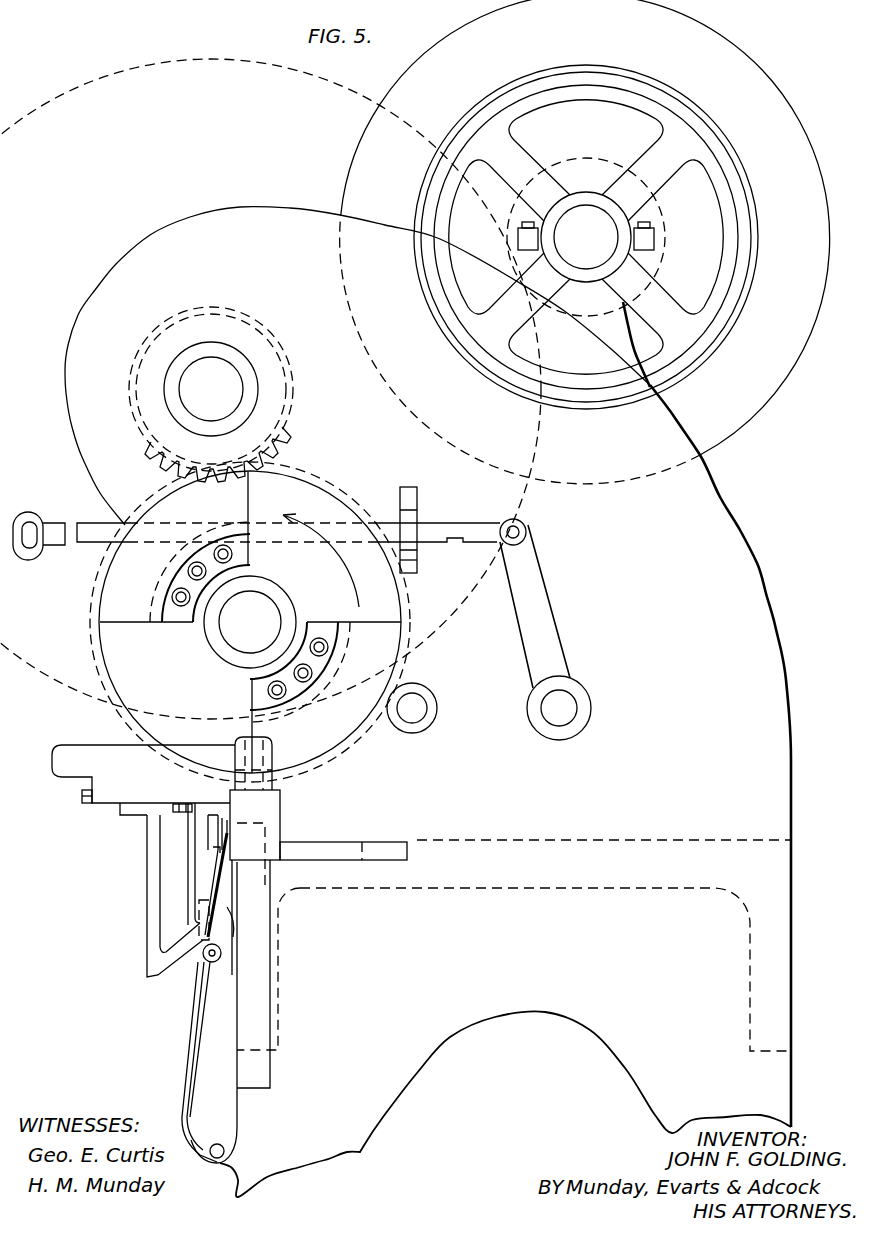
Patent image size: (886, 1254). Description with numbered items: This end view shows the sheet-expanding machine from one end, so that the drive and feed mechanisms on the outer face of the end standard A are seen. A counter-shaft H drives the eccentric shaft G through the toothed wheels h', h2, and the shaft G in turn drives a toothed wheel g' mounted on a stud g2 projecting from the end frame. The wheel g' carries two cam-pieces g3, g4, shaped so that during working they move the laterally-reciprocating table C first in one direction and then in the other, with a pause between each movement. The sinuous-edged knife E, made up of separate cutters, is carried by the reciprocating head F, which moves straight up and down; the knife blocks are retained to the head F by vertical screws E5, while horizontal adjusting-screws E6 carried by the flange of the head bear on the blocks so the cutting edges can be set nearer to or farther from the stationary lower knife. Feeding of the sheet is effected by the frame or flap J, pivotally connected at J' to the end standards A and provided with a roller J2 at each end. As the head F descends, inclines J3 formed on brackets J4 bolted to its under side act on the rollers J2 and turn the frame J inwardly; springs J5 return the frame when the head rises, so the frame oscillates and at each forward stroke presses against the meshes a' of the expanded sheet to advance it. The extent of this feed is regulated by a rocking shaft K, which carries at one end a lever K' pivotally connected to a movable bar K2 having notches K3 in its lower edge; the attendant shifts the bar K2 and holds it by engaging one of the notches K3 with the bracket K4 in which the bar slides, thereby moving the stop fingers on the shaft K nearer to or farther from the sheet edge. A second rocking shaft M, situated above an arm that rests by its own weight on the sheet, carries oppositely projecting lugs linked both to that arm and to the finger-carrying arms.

The end standards A is at (447, 598).
The counter-shaft H is at (586, 237).
The toothed wheel h' is at (586, 223).
The toothed wheel h2 is at (333, 82).
The shaft G is at (211, 389).
The toothed wheel g' is at (223, 454).
The stud g2 is at (250, 622).
The cam-piece g3 is at (250, 622).
The cam-piece g4 is at (325, 697).
The movable bar K2 is at (60, 521).
The notches K3 is at (457, 537).
The bracket K4 is at (422, 563).
The lever K' is at (535, 606).
The rocking shaft K is at (559, 708).
The rocking shaft M is at (412, 708).
The table C is at (318, 913).
The reciprocating head F is at (143, 774).
The horizontal adjusting-screws E6 is at (82, 805).
The vertical screws E5 is at (173, 807).
The sinuous-edged knife E is at (220, 810).
The inclines J3 is at (157, 977).
The brackets J4 is at (178, 864).
The meshes a' is at (193, 856).
The springs J5 is at (227, 919).
The roller J2 is at (221, 953).
The frame or flap J is at (189, 1062).
The pivot J' is at (211, 1133).